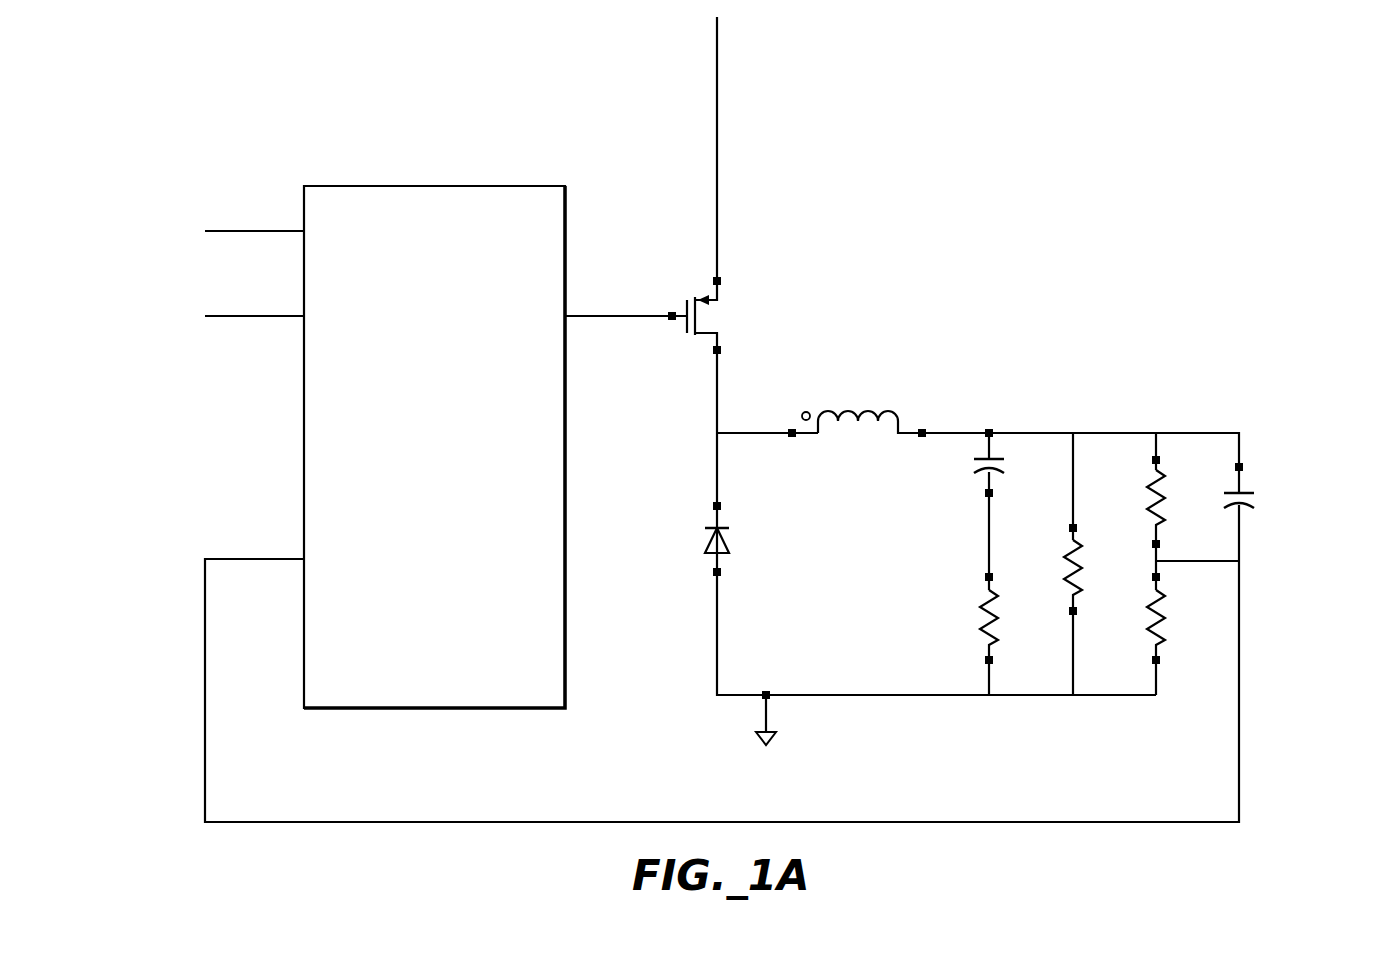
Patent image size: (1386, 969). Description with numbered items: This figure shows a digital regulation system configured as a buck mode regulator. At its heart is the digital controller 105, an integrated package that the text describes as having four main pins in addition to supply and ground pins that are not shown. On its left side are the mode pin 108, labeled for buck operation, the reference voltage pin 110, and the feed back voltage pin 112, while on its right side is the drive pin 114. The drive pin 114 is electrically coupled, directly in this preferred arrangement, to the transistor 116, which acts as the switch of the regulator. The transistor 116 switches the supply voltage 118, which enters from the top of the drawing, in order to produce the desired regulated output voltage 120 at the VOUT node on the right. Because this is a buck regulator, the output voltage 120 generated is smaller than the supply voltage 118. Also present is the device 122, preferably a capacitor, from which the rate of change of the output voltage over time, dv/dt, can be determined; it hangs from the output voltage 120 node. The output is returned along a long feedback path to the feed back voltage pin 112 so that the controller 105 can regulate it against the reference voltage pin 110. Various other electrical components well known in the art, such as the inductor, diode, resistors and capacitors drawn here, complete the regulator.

The digital controller 105 is at (519, 179).
The mode pin 108 is at (222, 233).
The reference voltage pin 110 is at (222, 318).
The feed back voltage pin 112 is at (270, 559).
The drive pin 114 is at (592, 316).
The transistor 116 is at (702, 345).
The supply voltage 118 is at (717, 34).
The output voltage 120 is at (1186, 433).
The device for determining dv/dt 122 is at (1262, 495).